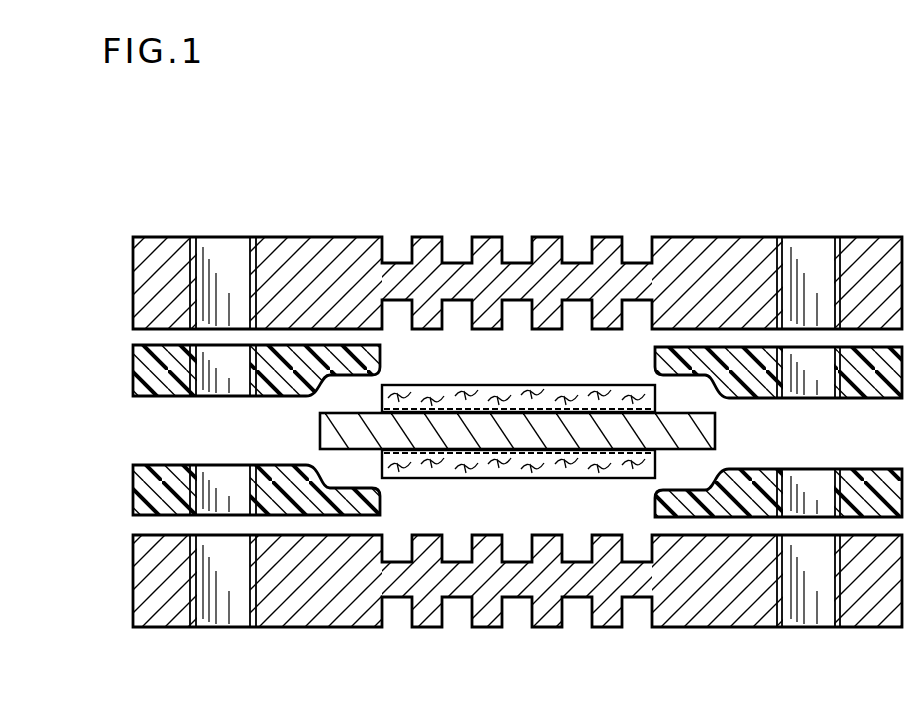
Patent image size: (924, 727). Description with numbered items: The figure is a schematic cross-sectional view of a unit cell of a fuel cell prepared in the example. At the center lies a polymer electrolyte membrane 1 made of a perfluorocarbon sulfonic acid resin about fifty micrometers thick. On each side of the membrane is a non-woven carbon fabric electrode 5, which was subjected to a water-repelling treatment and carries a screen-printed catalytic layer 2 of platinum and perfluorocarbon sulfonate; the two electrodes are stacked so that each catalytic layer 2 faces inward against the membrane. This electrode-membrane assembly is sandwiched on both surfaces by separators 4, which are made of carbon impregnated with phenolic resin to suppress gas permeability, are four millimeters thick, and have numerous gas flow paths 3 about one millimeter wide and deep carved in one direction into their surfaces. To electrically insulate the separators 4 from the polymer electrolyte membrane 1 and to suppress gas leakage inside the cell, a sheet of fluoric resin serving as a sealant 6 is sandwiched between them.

The polymer electrolyte membrane 1 is at (552, 433).
The catalytic layer 2 is at (612, 410).
The gas flow paths 3 is at (518, 436).
The separators 4 is at (520, 317).
The non-woven carbon fabric electrode 5 is at (417, 462).
The sealant 6 is at (143, 477).